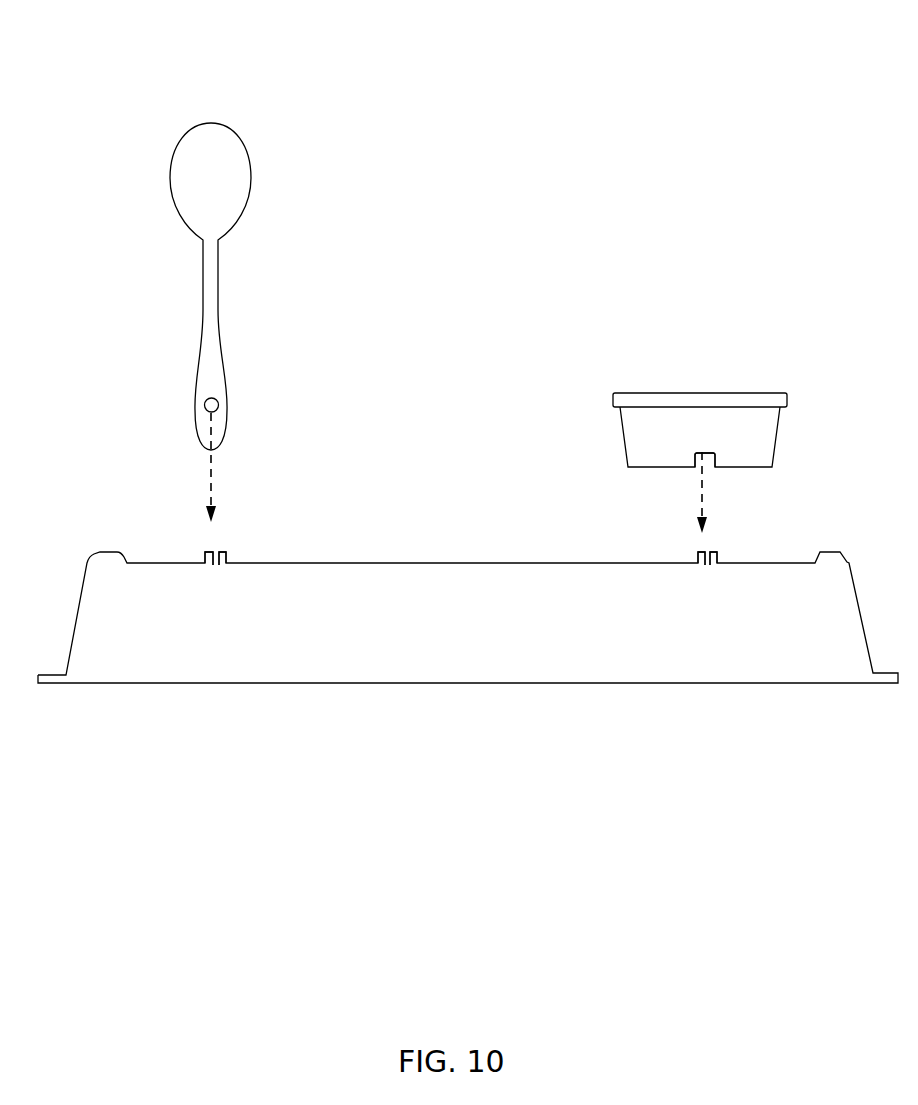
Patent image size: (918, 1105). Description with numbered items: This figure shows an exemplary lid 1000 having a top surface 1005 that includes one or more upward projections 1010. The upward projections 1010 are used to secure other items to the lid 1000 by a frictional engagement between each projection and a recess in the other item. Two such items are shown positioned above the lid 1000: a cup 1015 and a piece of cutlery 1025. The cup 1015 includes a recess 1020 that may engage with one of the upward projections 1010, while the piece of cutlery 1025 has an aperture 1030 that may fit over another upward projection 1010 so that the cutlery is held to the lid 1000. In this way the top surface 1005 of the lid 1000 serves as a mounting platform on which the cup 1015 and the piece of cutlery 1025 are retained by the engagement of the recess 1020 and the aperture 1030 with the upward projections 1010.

The lid 1000 is at (752, 94).
The top surface 1005 is at (443, 562).
The upward projection 1010 is at (223, 550).
The cup 1015 is at (772, 425).
The recess 1020 is at (693, 468).
The piece of cutlery 1025 is at (250, 190).
The aperture 1030 is at (222, 400).